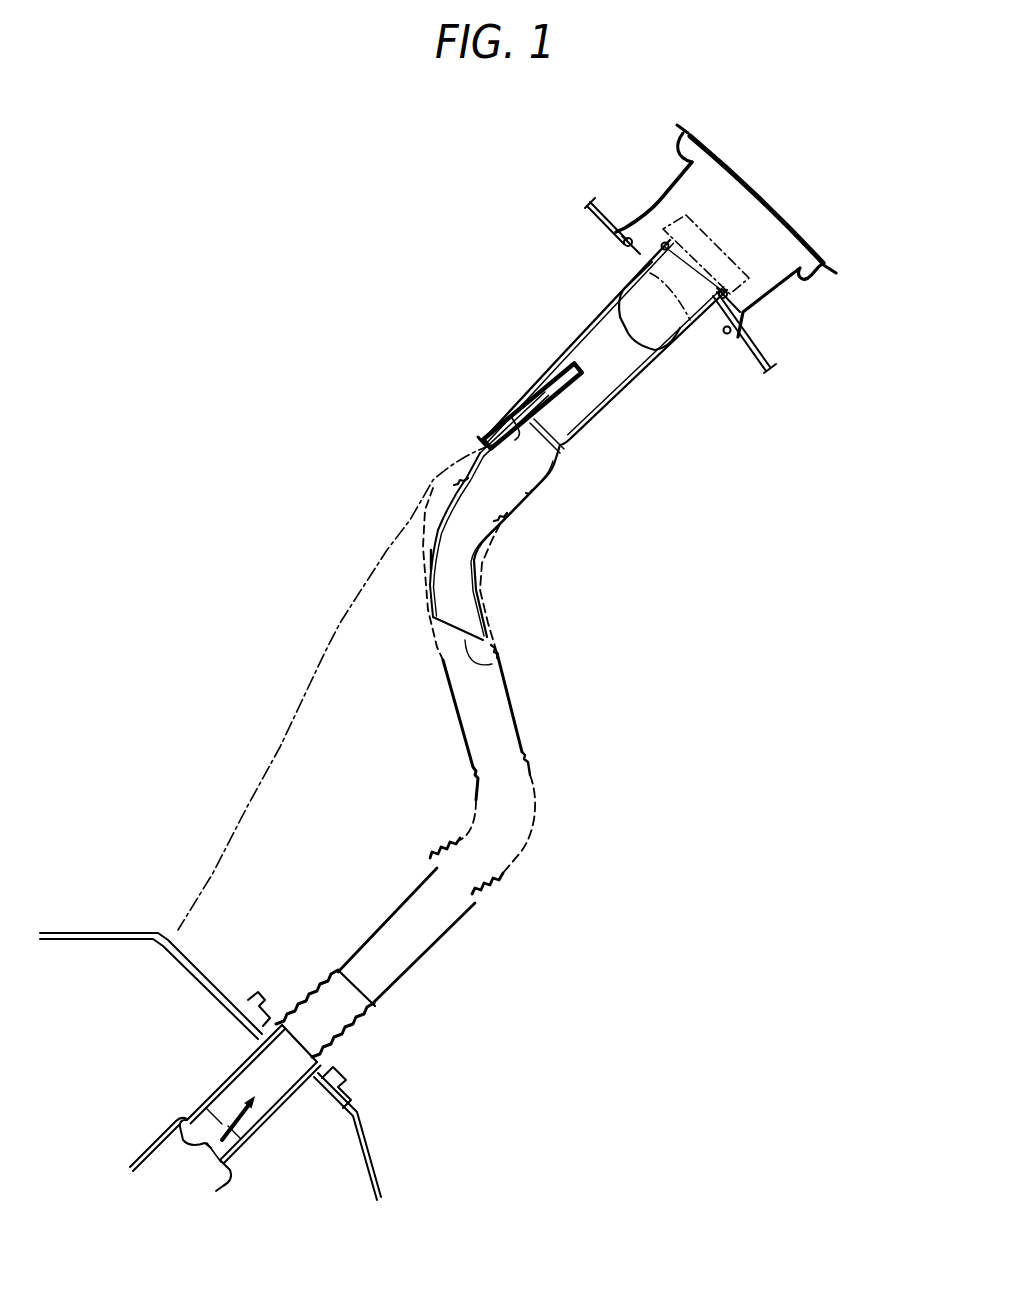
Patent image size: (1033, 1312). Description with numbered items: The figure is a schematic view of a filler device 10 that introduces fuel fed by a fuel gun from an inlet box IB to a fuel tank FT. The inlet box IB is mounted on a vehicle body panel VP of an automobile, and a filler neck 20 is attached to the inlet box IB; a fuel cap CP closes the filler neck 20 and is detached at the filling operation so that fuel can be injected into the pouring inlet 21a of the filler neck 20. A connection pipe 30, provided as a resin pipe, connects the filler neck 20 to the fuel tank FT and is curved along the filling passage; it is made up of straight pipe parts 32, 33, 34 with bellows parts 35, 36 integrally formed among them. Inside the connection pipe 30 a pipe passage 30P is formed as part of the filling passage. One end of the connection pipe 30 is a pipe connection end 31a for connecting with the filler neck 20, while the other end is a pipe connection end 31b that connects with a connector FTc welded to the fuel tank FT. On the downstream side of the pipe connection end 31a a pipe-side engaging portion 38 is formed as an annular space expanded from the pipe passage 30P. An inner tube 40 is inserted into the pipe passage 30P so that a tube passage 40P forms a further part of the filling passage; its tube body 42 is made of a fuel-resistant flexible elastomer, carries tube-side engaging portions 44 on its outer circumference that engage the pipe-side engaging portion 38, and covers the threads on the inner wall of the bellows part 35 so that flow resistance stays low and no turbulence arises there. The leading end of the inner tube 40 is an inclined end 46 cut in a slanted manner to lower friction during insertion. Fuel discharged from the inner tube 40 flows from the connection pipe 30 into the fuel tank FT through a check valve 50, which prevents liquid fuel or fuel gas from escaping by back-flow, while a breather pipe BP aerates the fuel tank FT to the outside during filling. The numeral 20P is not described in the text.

The filler device 10 is at (445, 284).
The filler neck 20 is at (660, 390).
The outer surface of upper filler pipe 20P is at (590, 408).
The pouring inlet 21a is at (673, 317).
The connection pipe 30 is at (534, 712).
The pipe passage 30P is at (480, 673).
The pipe connection end 31a is at (583, 428).
The pipe connection end 31b is at (349, 1023).
The straight pipe part 32 is at (530, 494).
The straight pipe part 33 is at (526, 741).
The straight pipe part 34 is at (442, 945).
The bellows part 35 is at (504, 520).
The bellows part 36 is at (498, 884).
The pipe-side engaging portion 38 is at (512, 412).
The inner tube 40 is at (414, 590).
The tube passage 40P is at (459, 603).
The tube body 42 is at (431, 558).
The tube-side engaging portion 44 is at (487, 447).
The inclined end 46 is at (495, 652).
The check valve 50 is at (274, 1142).
The breather pipe BP is at (472, 417).
The fuel cap CP is at (704, 256).
The fuel tank FT is at (375, 1145).
The connector FTc is at (322, 1061).
The inlet box IB is at (787, 290).
The vehicle body panel VP is at (772, 360).